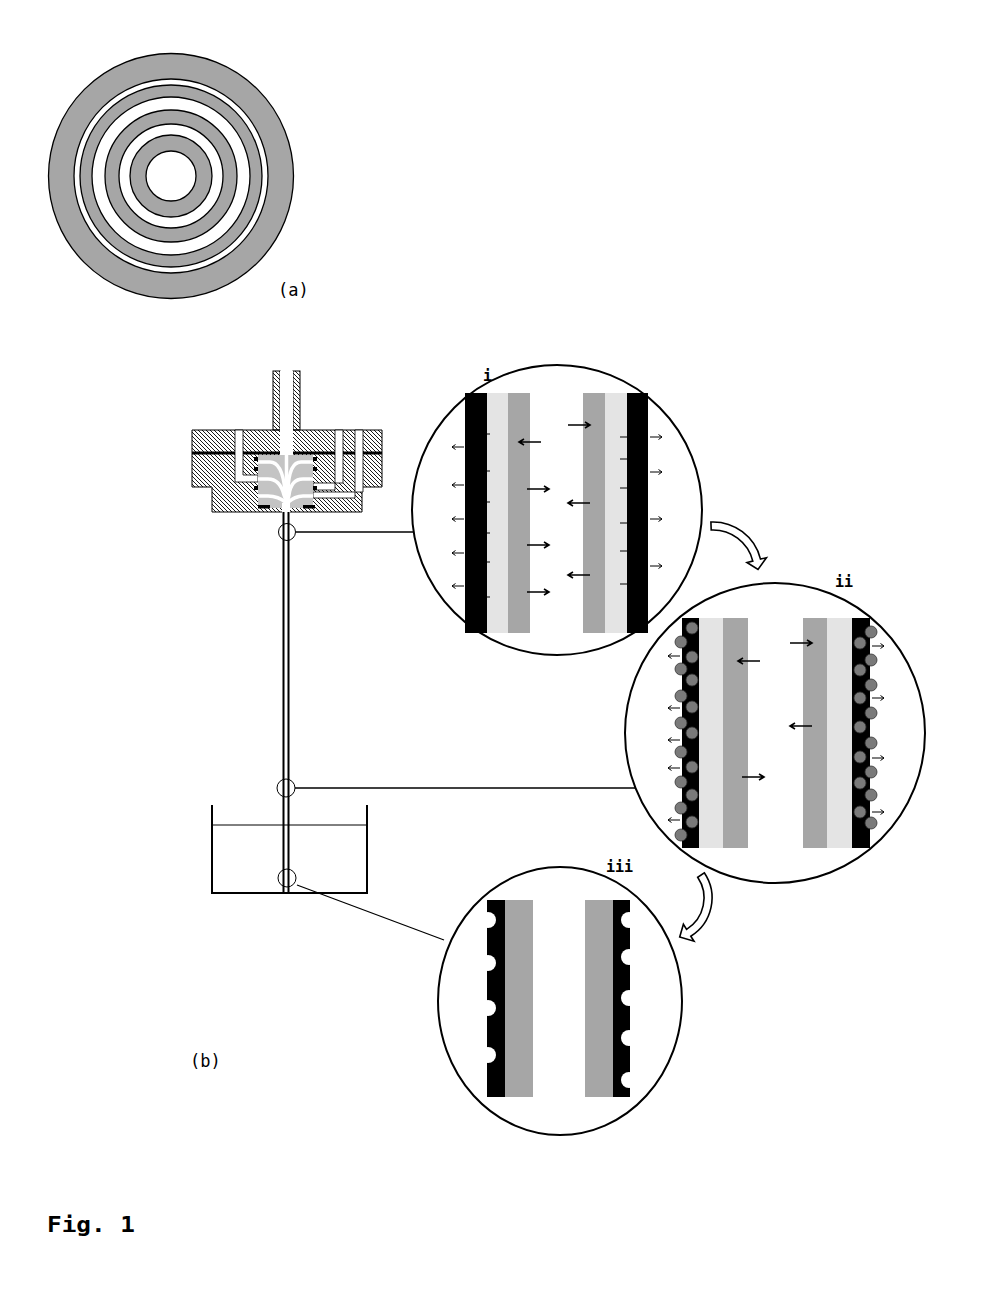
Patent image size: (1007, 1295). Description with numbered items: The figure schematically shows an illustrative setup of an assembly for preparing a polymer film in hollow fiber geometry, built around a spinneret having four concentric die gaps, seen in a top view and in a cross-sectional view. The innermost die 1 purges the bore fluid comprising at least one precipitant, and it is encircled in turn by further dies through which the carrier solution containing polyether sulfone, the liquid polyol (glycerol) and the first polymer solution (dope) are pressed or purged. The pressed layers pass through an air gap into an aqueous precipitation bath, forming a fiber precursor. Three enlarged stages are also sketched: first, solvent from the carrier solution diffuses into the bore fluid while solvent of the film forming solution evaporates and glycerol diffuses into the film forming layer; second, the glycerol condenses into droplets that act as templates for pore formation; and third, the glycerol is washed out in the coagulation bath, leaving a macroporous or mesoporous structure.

The first, innermost die 1 is at (154, 165).